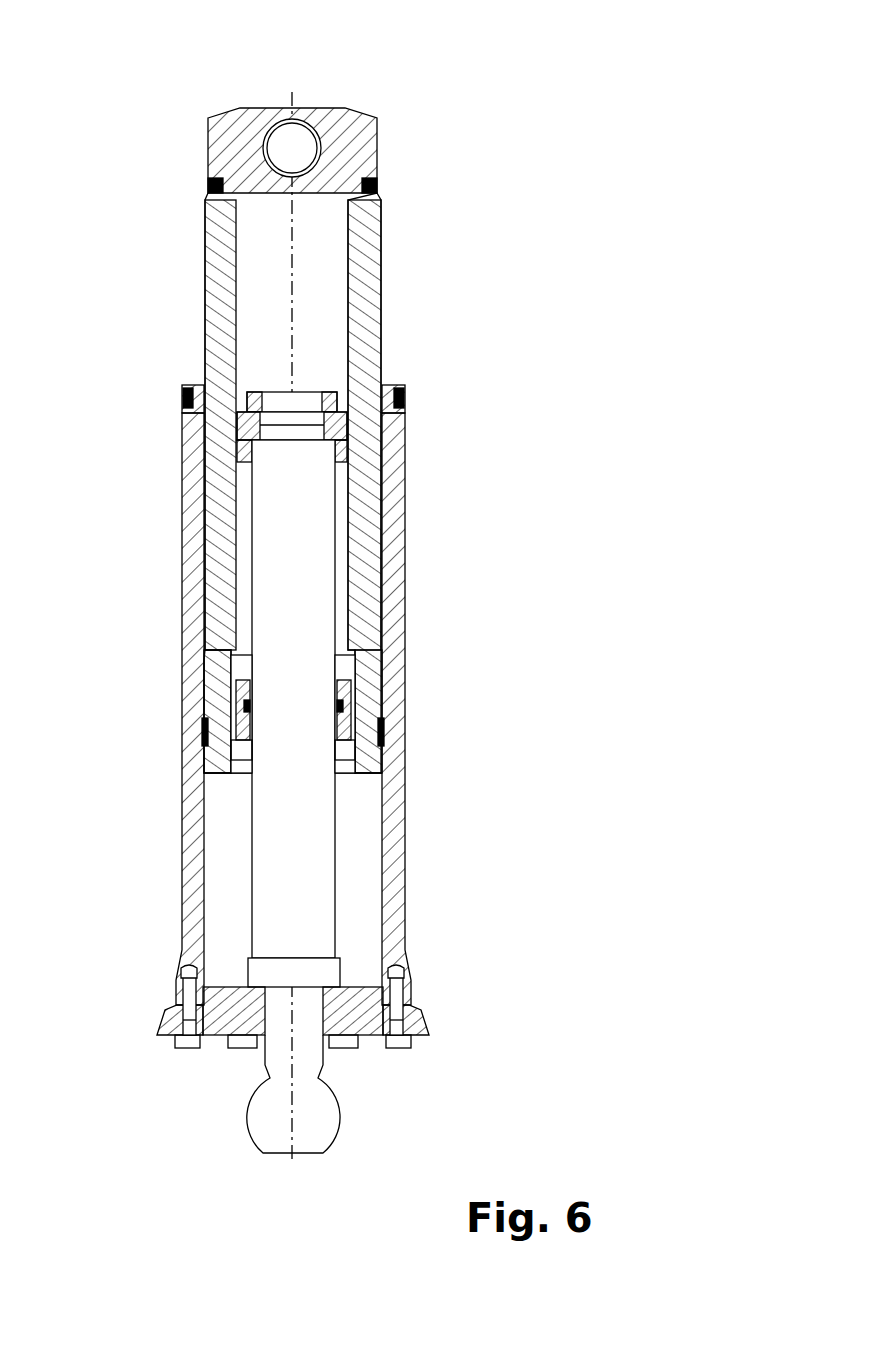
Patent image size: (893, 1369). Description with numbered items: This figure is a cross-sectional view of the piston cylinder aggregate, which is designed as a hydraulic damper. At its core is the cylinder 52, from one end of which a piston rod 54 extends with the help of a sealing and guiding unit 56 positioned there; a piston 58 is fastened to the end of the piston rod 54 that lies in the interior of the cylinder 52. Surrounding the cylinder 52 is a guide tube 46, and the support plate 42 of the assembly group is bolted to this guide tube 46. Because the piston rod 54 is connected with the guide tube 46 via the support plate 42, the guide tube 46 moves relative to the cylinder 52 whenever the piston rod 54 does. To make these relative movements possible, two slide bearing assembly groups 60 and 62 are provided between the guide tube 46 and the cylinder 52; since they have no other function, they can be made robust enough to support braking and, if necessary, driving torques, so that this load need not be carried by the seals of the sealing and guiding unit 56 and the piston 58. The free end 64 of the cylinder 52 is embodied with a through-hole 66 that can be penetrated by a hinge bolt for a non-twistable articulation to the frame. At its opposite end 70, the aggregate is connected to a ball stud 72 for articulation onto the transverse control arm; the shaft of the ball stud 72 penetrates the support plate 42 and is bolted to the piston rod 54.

The support plate 42 is at (372, 1030).
The guide tube 46 is at (404, 873).
The cylinder 52 is at (368, 276).
The piston rod 54 is at (268, 878).
The sealing and guiding unit 56 is at (235, 707).
The piston 58 is at (242, 418).
The slide bearing assembly group 60 is at (404, 430).
The slide bearing assembly group 62 is at (378, 736).
The free end 64 is at (362, 138).
The through-hole 66 is at (306, 142).
The opposite end 70 is at (162, 1018).
The ball stud 72 is at (268, 1117).